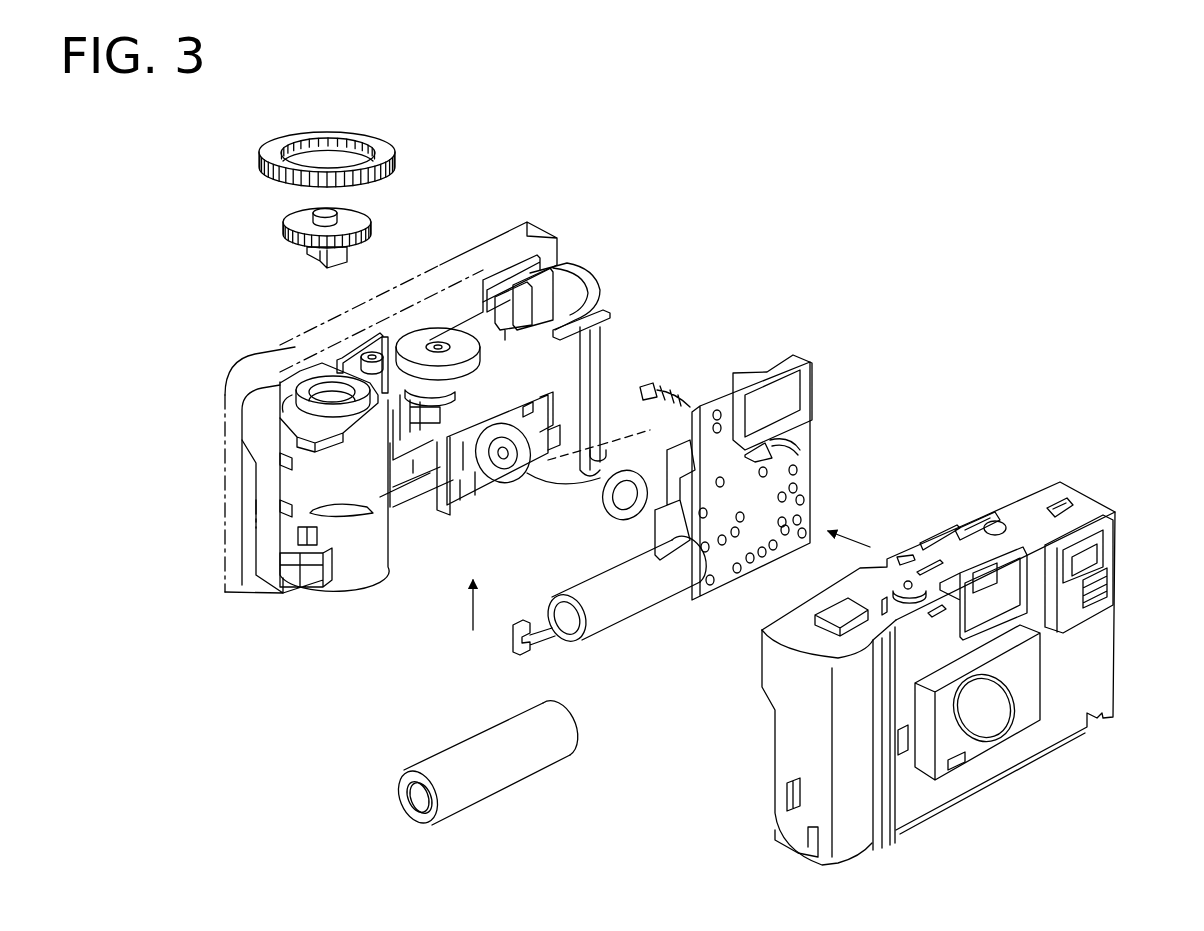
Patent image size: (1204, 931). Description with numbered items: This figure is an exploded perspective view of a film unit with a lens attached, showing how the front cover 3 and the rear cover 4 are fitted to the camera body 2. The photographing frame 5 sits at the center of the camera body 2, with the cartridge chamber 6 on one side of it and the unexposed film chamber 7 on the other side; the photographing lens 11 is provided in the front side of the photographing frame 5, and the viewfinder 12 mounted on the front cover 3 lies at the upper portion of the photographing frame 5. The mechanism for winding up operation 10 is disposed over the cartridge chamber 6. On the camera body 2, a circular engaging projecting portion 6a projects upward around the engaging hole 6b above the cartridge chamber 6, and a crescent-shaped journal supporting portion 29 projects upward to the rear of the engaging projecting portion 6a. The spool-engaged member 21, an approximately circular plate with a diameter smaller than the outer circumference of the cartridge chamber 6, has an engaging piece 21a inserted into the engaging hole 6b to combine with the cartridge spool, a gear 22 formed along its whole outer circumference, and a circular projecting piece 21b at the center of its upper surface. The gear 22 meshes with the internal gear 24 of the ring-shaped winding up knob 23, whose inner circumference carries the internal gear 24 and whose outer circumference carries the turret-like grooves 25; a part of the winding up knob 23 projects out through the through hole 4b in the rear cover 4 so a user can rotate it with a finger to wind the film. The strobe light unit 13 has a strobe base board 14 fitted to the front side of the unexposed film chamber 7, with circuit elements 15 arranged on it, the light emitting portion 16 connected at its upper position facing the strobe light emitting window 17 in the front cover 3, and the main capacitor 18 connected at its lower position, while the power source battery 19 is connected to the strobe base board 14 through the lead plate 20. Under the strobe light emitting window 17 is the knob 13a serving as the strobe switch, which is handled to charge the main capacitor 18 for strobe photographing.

The camera body 2 is at (590, 275).
The front cover 3 is at (1010, 781).
The rear cover 4 is at (508, 222).
The through hole 4b is at (293, 357).
The photographing frame 5 is at (478, 488).
The cartridge chamber 6 is at (350, 580).
The engaging projecting portion 6a is at (335, 405).
The engaging hole 6b is at (330, 412).
The unexposed film chamber 7 is at (562, 360).
The mechanism for winding up operation 10 is at (418, 162).
The photographing lens 11 is at (610, 500).
The viewfinder 12 is at (968, 575).
The strobe light unit 13 is at (727, 593).
The knob 13a is at (1093, 573).
The strobe base board 14 is at (803, 463).
The circuit elements 15 is at (660, 523).
The light emitting portion 16 is at (790, 402).
The strobe light emitting window 17 is at (1080, 547).
The main capacitor 18 is at (628, 610).
The power source battery 19 is at (522, 753).
The lead plate 20 is at (547, 637).
The spool-engaged member 21 is at (273, 237).
The engaging piece 21a is at (317, 260).
The circular projecting piece 21b is at (337, 220).
The gear 22 is at (370, 230).
The winding up knob 23 is at (252, 172).
The internal gear 24 is at (343, 142).
The turret-like grooves 25 is at (393, 162).
The journal supporting portion 29 is at (280, 403).